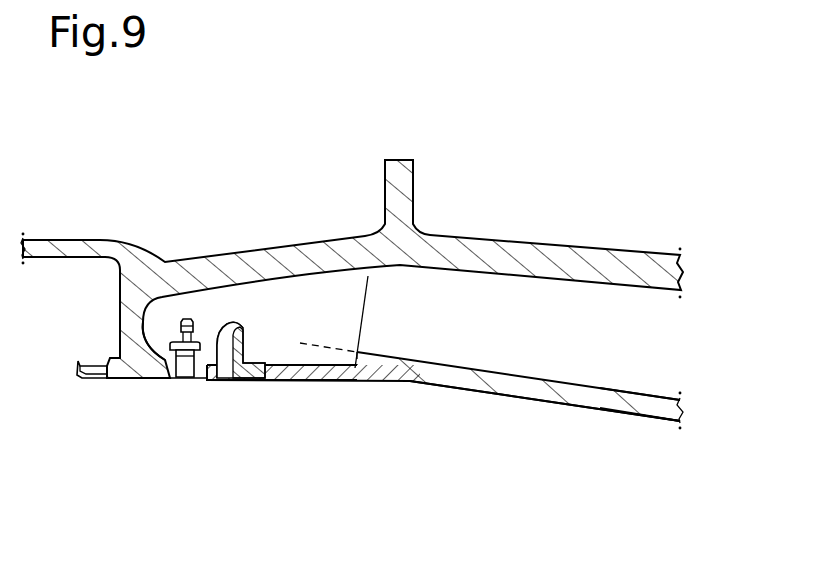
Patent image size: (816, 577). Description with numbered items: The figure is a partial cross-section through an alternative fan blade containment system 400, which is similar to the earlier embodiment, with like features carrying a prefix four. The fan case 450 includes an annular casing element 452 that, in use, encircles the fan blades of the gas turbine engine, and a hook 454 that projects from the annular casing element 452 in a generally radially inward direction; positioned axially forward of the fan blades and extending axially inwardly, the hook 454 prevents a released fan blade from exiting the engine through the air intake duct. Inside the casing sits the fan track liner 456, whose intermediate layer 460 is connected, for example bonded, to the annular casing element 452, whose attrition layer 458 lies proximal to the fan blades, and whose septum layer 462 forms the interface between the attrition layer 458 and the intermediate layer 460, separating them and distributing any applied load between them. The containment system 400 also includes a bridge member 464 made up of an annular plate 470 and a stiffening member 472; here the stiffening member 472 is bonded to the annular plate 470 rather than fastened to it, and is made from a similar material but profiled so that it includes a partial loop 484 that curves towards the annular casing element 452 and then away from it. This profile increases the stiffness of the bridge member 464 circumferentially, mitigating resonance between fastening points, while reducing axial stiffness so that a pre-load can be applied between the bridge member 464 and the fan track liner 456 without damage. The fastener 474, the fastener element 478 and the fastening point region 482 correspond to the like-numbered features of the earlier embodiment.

The fan containment system 400 is at (578, 150).
The fan case 450 is at (632, 248).
The annular casing element 452 is at (437, 240).
The hook 454 is at (135, 333).
The fan track liner 456 is at (523, 395).
The attrition layer 458 is at (620, 400).
The intermediate layer 460 is at (570, 333).
The septum layer 462 is at (640, 394).
The bridge member 464 is at (252, 388).
The annular plate 470 is at (290, 392).
The stiffening member 472 is at (243, 345).
The fastener 474 is at (170, 338).
The fastener element 478 is at (218, 380).
The fastening point region 482 is at (337, 380).
The partial loop 484 is at (220, 323).